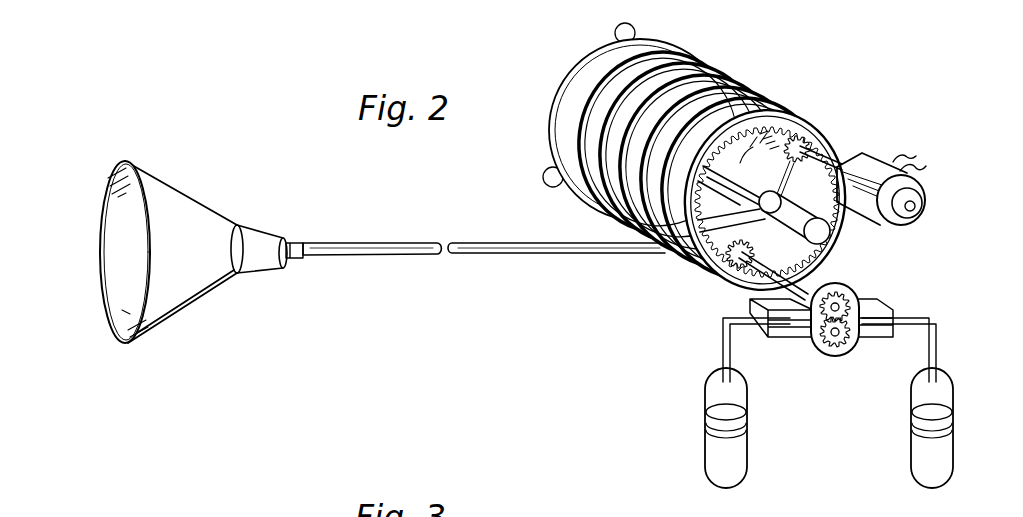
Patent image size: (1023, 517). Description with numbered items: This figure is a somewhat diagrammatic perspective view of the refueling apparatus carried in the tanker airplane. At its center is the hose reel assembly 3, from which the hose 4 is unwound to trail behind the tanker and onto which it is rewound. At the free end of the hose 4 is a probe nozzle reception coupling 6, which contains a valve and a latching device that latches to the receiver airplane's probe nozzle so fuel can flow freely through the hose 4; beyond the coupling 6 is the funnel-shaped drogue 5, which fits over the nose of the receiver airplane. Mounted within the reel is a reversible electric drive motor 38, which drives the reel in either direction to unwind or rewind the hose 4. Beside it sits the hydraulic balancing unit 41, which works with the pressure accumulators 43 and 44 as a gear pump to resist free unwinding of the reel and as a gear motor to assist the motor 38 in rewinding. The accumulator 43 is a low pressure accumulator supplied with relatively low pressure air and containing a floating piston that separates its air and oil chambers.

The hose reel assembly 3 is at (788, 99).
The hose 4 is at (507, 250).
The drogue 5 is at (178, 191).
The probe nozzle reception coupling 6 is at (261, 226).
The reversible electric drive motor 38 is at (870, 163).
The hydraulic balancing unit 41 is at (808, 343).
The pressure accumulator 43 is at (745, 405).
The pressure accumulator 44 is at (952, 394).